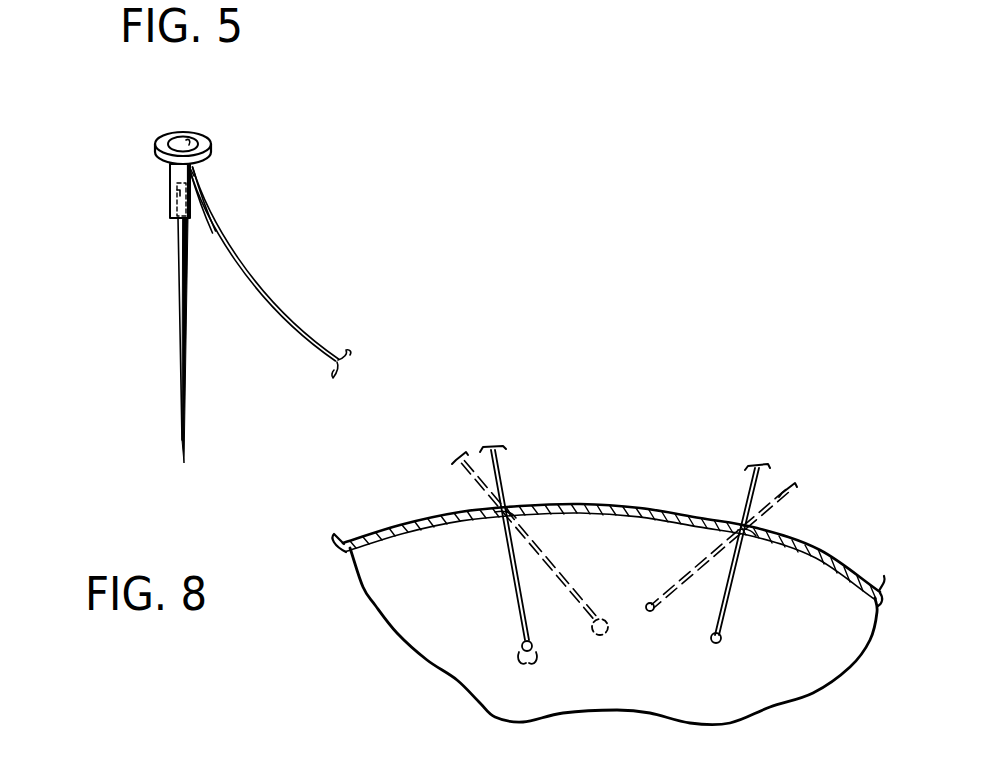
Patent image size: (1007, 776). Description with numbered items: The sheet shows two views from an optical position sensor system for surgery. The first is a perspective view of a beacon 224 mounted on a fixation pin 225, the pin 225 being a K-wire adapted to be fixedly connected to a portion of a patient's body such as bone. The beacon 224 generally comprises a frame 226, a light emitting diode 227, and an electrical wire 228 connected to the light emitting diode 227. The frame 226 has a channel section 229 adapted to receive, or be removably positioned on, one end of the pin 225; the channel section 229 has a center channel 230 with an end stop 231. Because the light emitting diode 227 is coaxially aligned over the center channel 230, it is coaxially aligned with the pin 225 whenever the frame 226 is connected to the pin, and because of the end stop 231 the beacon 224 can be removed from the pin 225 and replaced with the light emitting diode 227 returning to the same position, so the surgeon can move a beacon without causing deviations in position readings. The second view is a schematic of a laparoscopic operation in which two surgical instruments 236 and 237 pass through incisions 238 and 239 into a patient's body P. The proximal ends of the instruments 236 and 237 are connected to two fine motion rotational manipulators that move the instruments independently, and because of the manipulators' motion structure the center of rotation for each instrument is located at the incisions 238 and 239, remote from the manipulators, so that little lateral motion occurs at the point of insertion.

In FIG. 5, the beacon 224 is at (157, 150).
In FIG. 5, the fixation pin 225 is at (178, 313).
In FIG. 5, the frame 226 is at (162, 138).
In FIG. 5, the light emitting diode (LED) 227 is at (186, 140).
In FIG. 5, the electrical wire 228 is at (290, 322).
In FIG. 5, the channel section 229 is at (200, 212).
In FIG. 5, the center channel 230 is at (178, 206).
In FIG. 5, the end stop 231 is at (197, 178).
In FIG. 8, the surgical instrument 236 is at (500, 468).
In FIG. 8, the surgical instrument 237 is at (745, 498).
In FIG. 8, the incision 238 is at (500, 520).
In FIG. 8, the incision 239 is at (745, 538).
In FIG. 8, the patient's body p is at (812, 550).